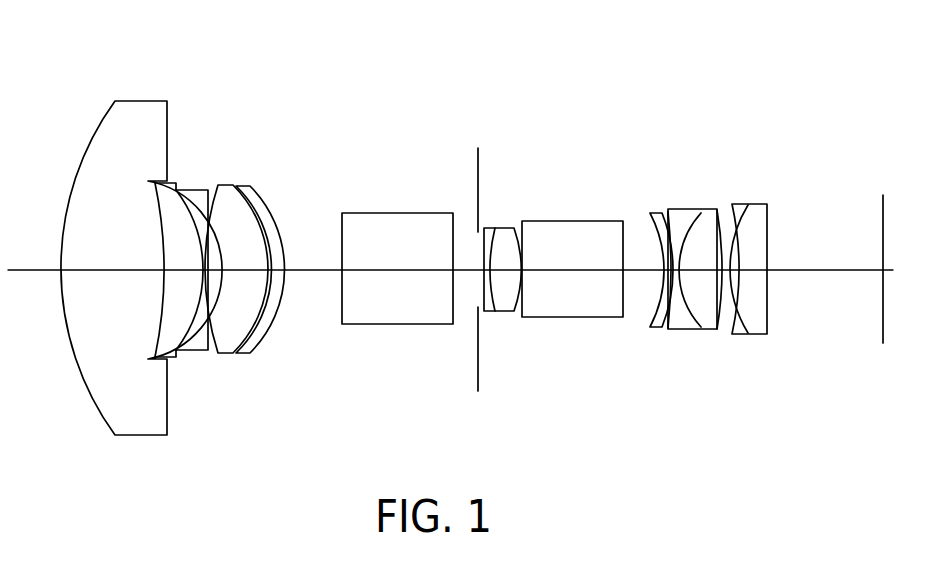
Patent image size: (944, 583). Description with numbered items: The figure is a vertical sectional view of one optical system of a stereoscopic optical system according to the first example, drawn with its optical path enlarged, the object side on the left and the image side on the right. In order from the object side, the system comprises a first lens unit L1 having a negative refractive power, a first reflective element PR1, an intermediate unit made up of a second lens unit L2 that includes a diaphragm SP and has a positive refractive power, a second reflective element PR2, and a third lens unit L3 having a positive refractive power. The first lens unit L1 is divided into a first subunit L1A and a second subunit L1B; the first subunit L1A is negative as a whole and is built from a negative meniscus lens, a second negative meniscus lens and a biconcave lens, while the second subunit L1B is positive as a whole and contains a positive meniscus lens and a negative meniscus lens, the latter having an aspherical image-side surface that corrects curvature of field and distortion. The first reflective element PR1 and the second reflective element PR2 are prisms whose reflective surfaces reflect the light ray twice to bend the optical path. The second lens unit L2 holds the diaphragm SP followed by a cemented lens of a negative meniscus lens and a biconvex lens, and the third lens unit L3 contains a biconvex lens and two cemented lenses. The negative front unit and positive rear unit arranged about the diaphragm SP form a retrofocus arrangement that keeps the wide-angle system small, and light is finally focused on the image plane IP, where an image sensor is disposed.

The first lens unit L1 is at (53, 60).
The 1A lens unit L1A is at (213, 105).
The 1B lens unit L1B is at (218, 106).
The second lens unit L2 is at (461, 153).
The third lens unit L3 is at (779, 150).
The first reflective element PR1 is at (377, 324).
The second reflective element PR2 is at (583, 317).
The diaphragm SP is at (477, 360).
The image plane IP is at (883, 325).